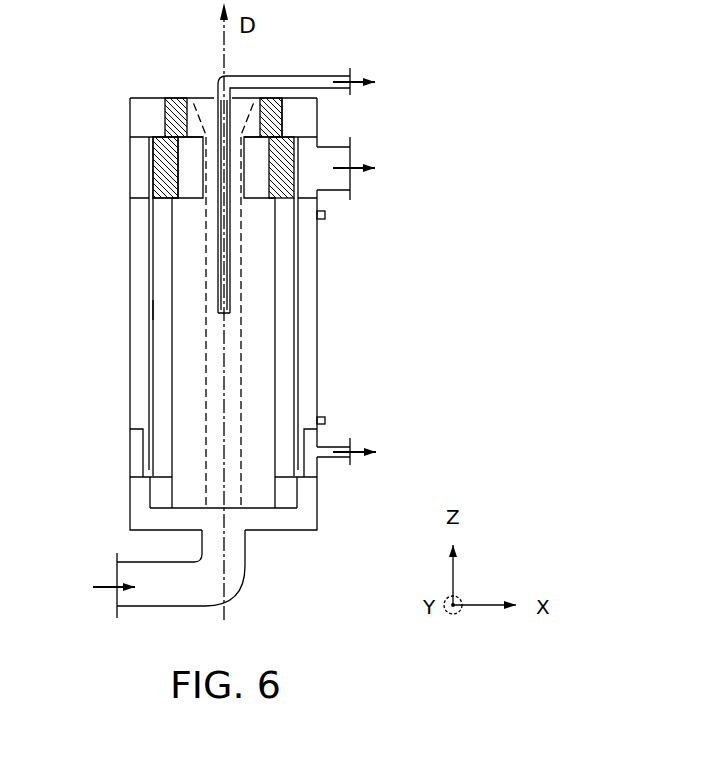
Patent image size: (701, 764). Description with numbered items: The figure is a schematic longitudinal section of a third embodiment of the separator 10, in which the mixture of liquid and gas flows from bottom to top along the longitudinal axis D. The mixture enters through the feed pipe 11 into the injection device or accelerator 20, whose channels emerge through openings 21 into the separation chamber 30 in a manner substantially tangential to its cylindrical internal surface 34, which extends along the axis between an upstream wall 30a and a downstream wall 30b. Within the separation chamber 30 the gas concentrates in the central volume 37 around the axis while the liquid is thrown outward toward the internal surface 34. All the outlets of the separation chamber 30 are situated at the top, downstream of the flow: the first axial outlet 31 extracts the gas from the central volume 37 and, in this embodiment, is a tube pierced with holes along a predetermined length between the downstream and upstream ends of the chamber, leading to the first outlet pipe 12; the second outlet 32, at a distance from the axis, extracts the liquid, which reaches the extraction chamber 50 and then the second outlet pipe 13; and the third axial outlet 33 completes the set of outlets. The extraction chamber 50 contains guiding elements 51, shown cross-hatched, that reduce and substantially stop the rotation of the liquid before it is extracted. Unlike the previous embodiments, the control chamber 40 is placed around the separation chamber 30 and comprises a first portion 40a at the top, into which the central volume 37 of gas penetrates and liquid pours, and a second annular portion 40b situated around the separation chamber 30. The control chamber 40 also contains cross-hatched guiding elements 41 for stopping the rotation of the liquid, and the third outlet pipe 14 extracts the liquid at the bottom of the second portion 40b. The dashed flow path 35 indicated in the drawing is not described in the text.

The separator 10 is at (489, 170).
The feed pipe 11 is at (148, 606).
The first outlet pipe 12 is at (275, 75).
The second outlet pipe 13 is at (333, 146).
The third outlet pipe 14 is at (332, 445).
The injection device or accelerator 20 is at (110, 518).
The openings 21 is at (150, 493).
The separation chamber 30 is at (261, 307).
The upstream wall 30a is at (262, 507).
The downstream wall 30b is at (175, 208).
The first axial outlet 31 is at (198, 309).
The second outlet 32 is at (182, 217).
The third axial outlet 33 is at (245, 218).
The cylindrical internal surface 34 is at (172, 298).
The flow path 35 is at (246, 362).
The central volume 37 is at (236, 499).
The control chamber 40 is at (126, 89).
The first portion 40a is at (295, 115).
The second annular portion 40b is at (306, 389).
The guiding elements 41 is at (175, 107).
The extraction chamber 50 is at (175, 173).
The guiding elements 51 is at (166, 161).